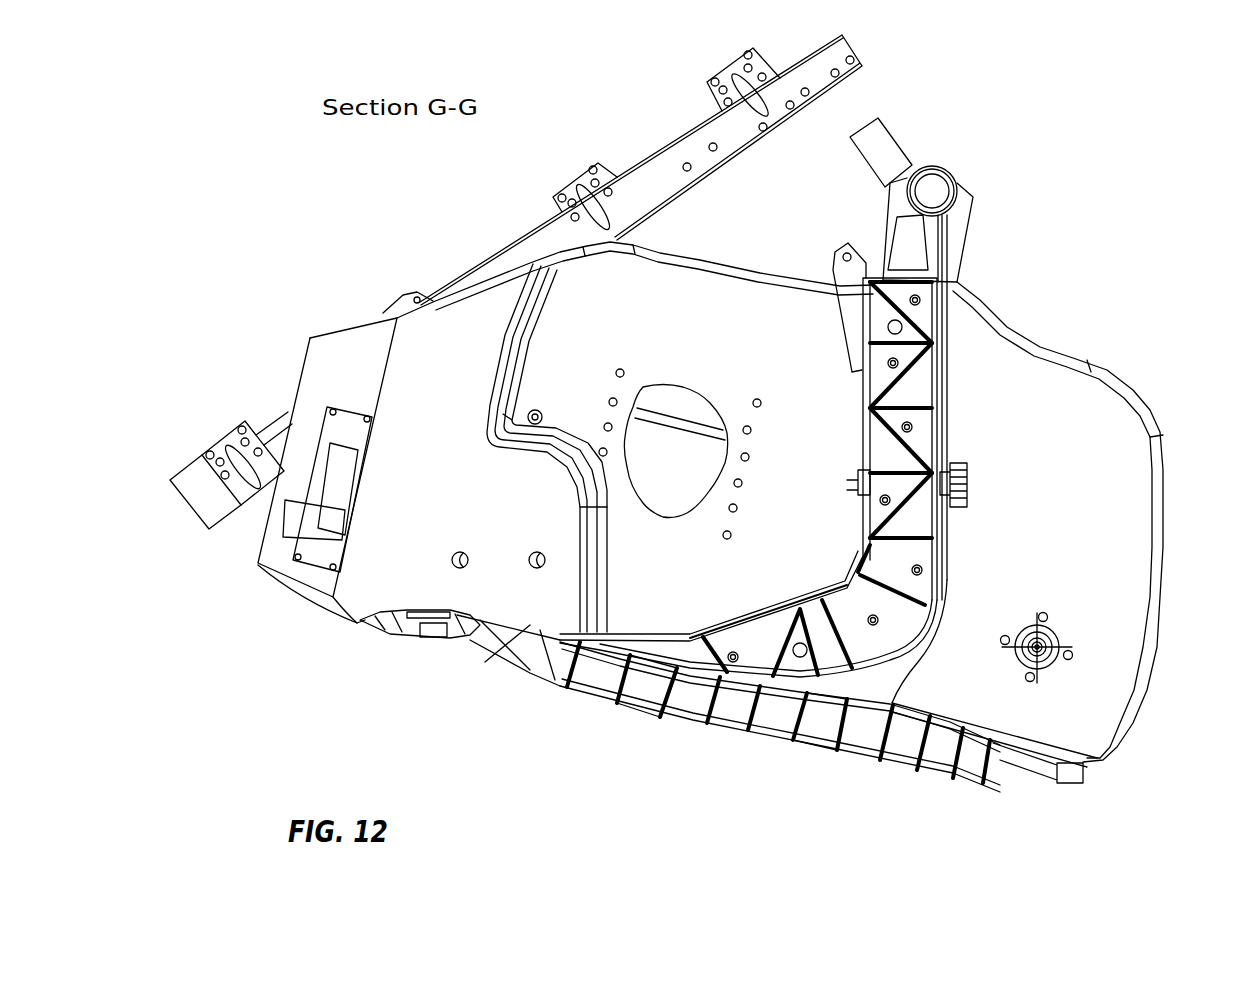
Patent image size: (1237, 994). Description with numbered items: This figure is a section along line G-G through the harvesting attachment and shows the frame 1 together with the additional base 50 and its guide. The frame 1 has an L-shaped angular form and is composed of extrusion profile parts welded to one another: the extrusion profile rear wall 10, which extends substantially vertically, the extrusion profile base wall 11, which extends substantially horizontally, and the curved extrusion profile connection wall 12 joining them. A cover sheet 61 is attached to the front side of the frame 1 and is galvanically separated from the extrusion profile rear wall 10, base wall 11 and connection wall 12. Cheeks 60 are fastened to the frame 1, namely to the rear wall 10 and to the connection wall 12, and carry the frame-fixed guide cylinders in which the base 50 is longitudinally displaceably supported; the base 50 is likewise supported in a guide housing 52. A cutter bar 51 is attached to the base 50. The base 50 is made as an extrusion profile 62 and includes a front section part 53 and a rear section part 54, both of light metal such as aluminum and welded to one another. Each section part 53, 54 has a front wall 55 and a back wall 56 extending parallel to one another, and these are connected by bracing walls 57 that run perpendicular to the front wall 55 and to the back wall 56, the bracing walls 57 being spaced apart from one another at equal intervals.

The frame 1 is at (1028, 368).
The extrusion profile rear wall 10 is at (878, 383).
The extrusion profile base wall 11 is at (757, 637).
The curved extrusion profile connection wall 12 is at (923, 587).
The base 50 is at (553, 773).
The cutter bar 51 is at (423, 637).
The guide housing 52 is at (957, 727).
The front section part 53 is at (600, 680).
The rear section part 54 is at (818, 733).
The front wall 55 is at (677, 717).
The back wall 56 is at (683, 657).
The bracing walls 57 is at (623, 683).
The cheeks 60 is at (1130, 470).
The cover sheet 61 is at (773, 603).
The extrusion profile 62 is at (645, 690).